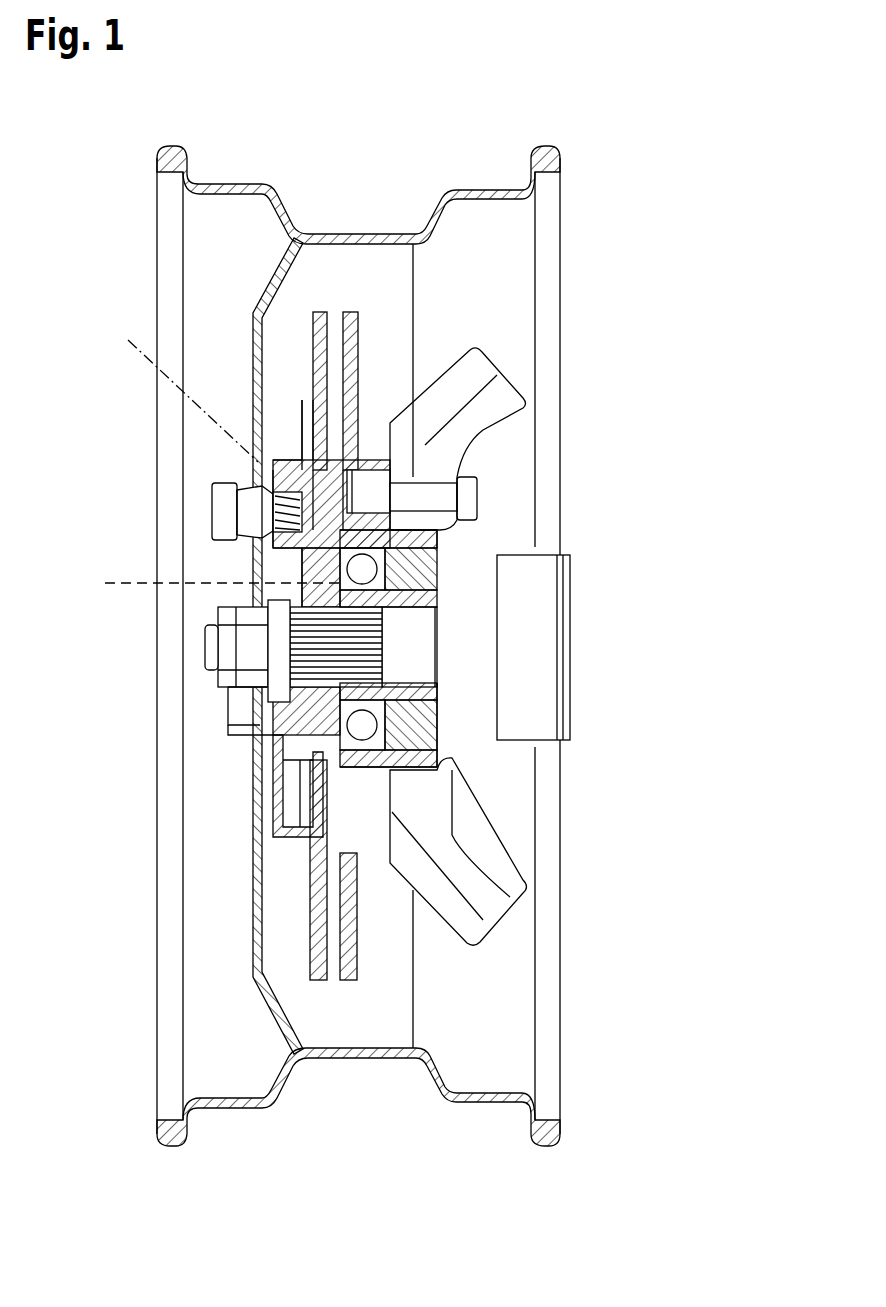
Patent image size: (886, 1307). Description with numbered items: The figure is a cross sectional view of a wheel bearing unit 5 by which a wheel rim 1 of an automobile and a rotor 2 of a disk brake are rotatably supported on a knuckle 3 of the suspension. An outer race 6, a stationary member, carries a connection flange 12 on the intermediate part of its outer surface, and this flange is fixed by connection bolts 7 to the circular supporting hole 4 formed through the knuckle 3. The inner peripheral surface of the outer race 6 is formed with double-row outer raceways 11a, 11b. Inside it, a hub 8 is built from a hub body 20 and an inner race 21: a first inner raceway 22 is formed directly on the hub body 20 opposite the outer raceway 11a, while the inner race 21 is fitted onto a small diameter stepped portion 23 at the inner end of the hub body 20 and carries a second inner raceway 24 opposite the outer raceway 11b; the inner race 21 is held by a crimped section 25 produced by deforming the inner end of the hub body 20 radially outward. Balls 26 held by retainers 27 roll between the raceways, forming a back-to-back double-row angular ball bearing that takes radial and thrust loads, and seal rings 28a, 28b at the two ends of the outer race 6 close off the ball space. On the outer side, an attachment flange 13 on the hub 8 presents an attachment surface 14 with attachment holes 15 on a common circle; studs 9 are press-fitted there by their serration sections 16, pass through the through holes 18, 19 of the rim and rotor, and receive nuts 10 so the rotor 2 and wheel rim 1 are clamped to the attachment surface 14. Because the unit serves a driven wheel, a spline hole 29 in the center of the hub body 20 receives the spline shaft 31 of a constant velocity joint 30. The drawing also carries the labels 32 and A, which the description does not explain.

The wheel rim 1 is at (238, 184).
The rotor 2 is at (350, 338).
The knuckle 3 is at (492, 385).
The circular supporting hole 4 is at (430, 752).
The wheel bearing unit 5 is at (250, 738).
The outer race 6 is at (483, 913).
The connection bolts 7 is at (437, 497).
The hub 8 is at (330, 583).
The studs 9 is at (252, 440).
The nuts 10 is at (215, 512).
The outer raceway 11a is at (320, 582).
The outer raceway 11b is at (437, 553).
The connection flange 12 is at (372, 470).
The attachment flange 13 is at (290, 788).
The attachment surface 14 is at (315, 782).
The attachment holes 15 is at (300, 560).
The serration section 16 is at (293, 462).
The through hole 18 is at (288, 517).
The through hole 19 is at (275, 555).
The hub body 20 is at (205, 620).
The inner race 21 is at (440, 585).
The first inner raceway 22 is at (230, 702).
The small diameter stepped portion 23 is at (440, 620).
The second inner raceway 24 is at (437, 743).
The crimped section 25 is at (440, 720).
The balls 26 is at (333, 420).
The retainers 27 is at (646, 703).
The seal ring 28a is at (345, 748).
The seal ring 28b is at (437, 540).
The spline hole 29 is at (230, 688).
The constant velocity joint 30 is at (540, 657).
The spline shaft 31 is at (203, 648).
The flange edge 32 is at (302, 463).
The axis A is at (184, 385).